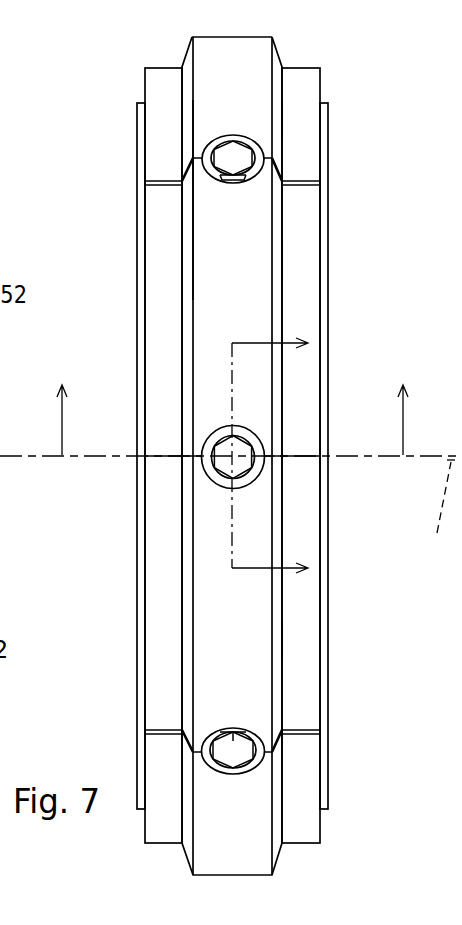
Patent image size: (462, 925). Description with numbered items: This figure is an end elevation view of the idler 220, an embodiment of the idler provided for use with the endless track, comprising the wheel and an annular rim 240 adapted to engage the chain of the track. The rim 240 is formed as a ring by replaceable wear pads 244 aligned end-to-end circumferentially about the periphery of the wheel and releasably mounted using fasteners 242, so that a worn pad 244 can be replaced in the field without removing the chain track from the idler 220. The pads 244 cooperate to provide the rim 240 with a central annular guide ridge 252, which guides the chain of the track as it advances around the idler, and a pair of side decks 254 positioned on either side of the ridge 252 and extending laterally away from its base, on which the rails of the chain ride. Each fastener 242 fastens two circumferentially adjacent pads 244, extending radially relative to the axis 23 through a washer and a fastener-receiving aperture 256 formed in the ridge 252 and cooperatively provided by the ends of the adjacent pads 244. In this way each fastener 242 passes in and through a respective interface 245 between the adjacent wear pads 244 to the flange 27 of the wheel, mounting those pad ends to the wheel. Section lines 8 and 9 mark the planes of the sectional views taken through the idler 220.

The idler 220 is at (118, 97).
The central annular guide ridge 252 is at (207, 237).
The side decks 254 is at (158, 307).
The annular rim 240 is at (347, 185).
The flange 27 is at (325, 231).
The replaceable wear pads 244 is at (290, 123).
The fasteners 242 is at (215, 150).
The fastener-receiving aperture 256 is at (212, 447).
The interface 245 is at (293, 458).
The axis 23 is at (439, 511).
The section line 8- 8 is at (233, 404).
The section line 9- 9 is at (272, 443).